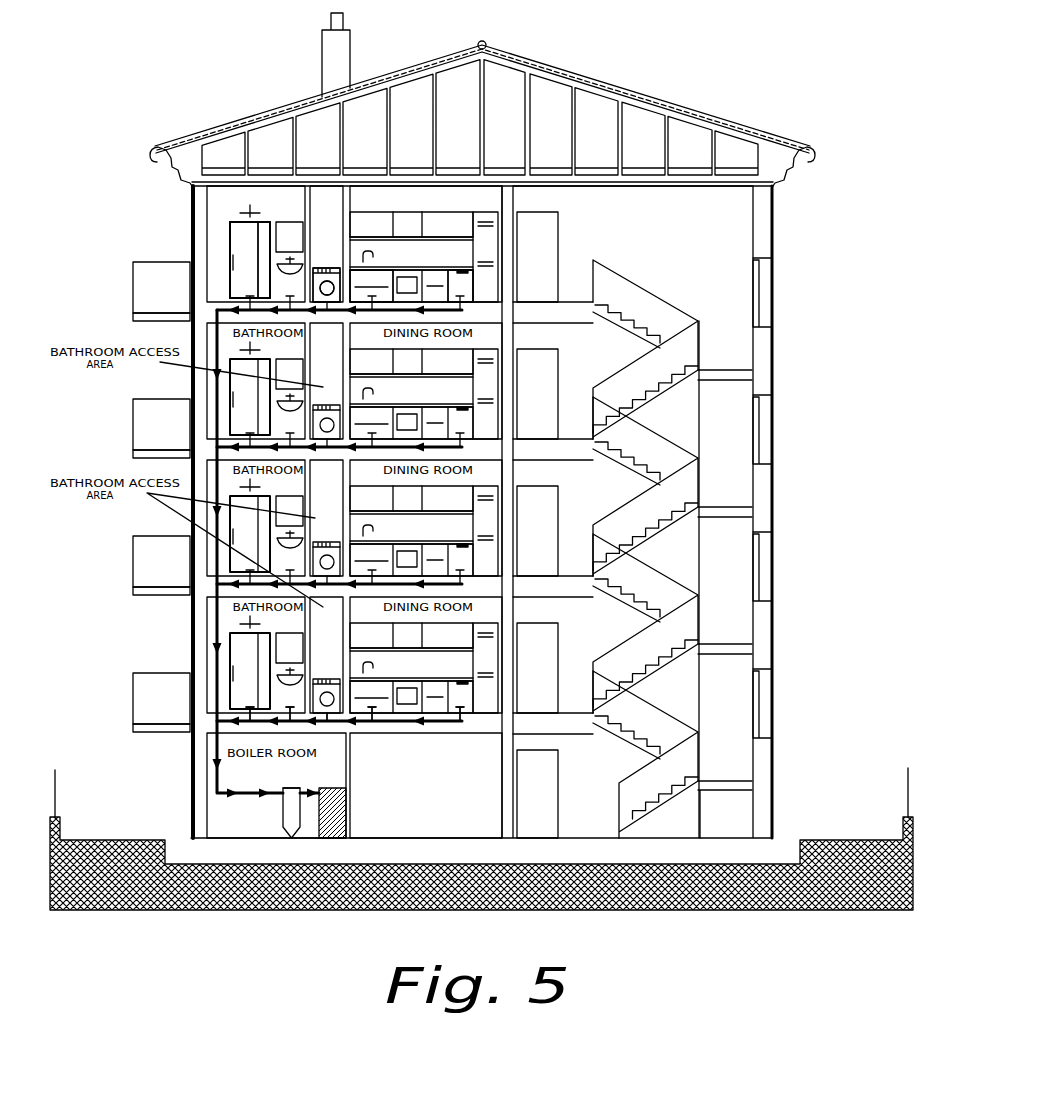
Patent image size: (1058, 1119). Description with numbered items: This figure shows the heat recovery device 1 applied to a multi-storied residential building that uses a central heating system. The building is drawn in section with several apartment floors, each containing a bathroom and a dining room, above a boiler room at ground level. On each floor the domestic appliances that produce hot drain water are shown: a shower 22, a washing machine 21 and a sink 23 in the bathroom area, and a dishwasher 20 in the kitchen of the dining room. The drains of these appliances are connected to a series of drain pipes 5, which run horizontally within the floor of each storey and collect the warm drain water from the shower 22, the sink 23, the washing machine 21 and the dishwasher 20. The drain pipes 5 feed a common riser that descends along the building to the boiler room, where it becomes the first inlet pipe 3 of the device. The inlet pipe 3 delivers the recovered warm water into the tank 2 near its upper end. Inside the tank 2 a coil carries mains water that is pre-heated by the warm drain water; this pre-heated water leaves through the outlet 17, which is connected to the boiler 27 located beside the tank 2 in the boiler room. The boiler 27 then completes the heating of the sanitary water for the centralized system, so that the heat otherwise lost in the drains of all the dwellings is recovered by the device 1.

The device for recovering heat 1 is at (275, 815).
The tank 2 is at (292, 790).
The first inlet pipe 3 is at (240, 793).
The drain pipes 5 is at (252, 707).
The outlet 17 is at (316, 793).
The dishwasher 20 is at (465, 284).
The washing machine 21 is at (325, 290).
The shower 22 is at (247, 247).
The sink 23 is at (372, 280).
The boiler 27 is at (330, 810).